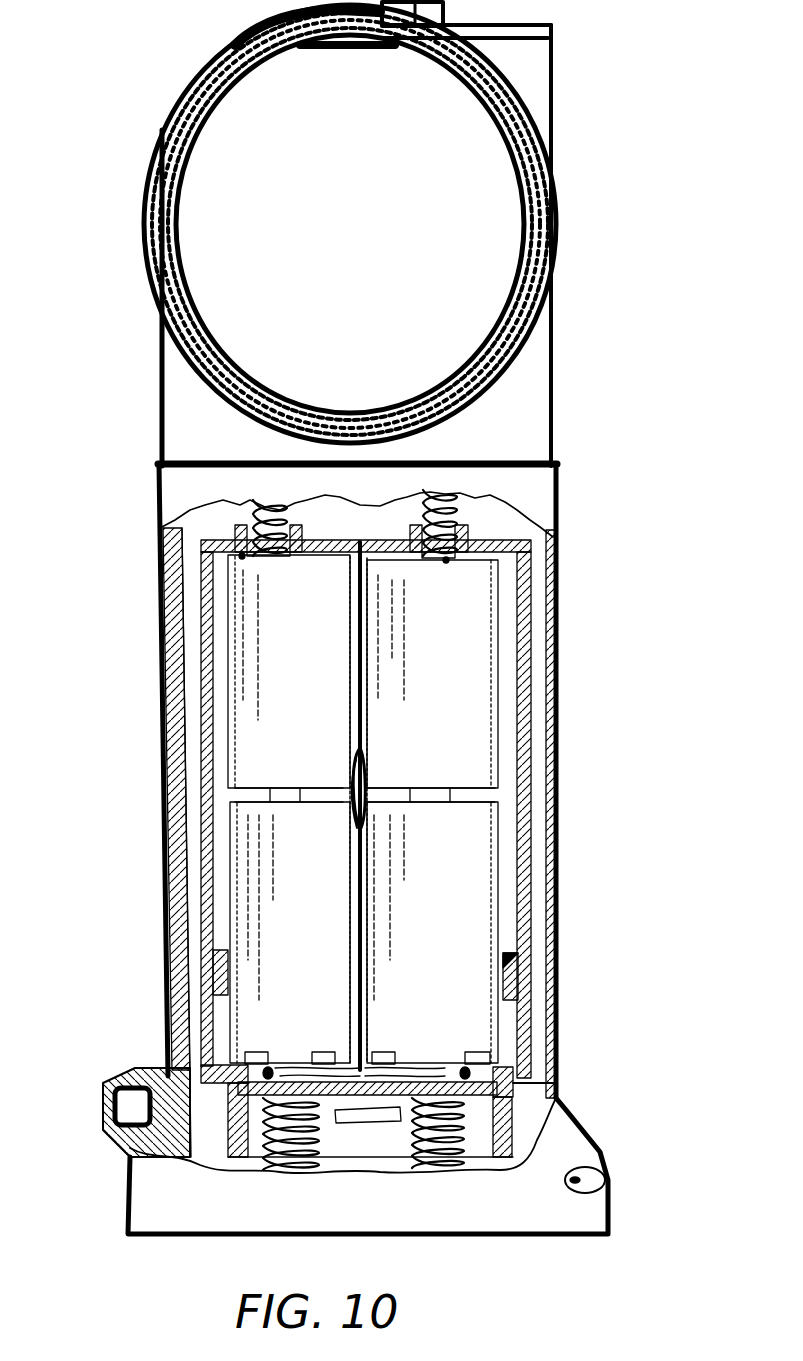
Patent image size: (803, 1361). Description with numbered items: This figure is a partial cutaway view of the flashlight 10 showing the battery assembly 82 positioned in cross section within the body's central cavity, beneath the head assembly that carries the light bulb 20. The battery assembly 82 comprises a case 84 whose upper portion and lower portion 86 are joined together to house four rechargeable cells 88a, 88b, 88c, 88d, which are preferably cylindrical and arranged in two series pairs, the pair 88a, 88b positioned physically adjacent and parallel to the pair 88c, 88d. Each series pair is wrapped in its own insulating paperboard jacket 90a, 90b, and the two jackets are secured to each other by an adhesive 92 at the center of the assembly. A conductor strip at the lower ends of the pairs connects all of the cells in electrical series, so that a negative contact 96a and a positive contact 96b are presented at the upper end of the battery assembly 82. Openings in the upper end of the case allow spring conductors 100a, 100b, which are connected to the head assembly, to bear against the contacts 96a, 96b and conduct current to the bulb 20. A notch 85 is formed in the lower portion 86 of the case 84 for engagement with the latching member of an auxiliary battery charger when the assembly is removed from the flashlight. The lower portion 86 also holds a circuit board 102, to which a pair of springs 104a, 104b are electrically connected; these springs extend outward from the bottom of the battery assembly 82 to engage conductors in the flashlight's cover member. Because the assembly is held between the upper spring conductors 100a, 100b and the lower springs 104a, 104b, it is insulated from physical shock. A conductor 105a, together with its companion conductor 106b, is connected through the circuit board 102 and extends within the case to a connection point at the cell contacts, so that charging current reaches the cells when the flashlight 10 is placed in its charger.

The flashlight 10 is at (150, 461).
The light bulb 20 is at (392, 203).
The battery assembly 82 is at (536, 576).
The case 84 is at (534, 799).
The notch 85 is at (372, 1124).
The lower portion 86 is at (530, 993).
The rechargeable cell 88a is at (297, 690).
The rechargeable cell 88b is at (307, 900).
The rechargeable cell 88c is at (463, 661).
The rechargeable cell 88d is at (448, 928).
The insulating paperboard jacket 90a is at (354, 524).
The insulating paperboard jacket 90b is at (368, 559).
The adhesive 92 is at (364, 784).
The negative contact 96a is at (327, 560).
The positive contact 96b is at (446, 563).
The spring conductor 100a is at (272, 500).
The spring conductor 100b is at (440, 490).
The circuit board 102 is at (545, 1084).
The spring 104a is at (272, 1172).
The spring 104b is at (432, 1167).
The conductor 105a is at (289, 1043).
The bottom contact 106b is at (464, 1072).